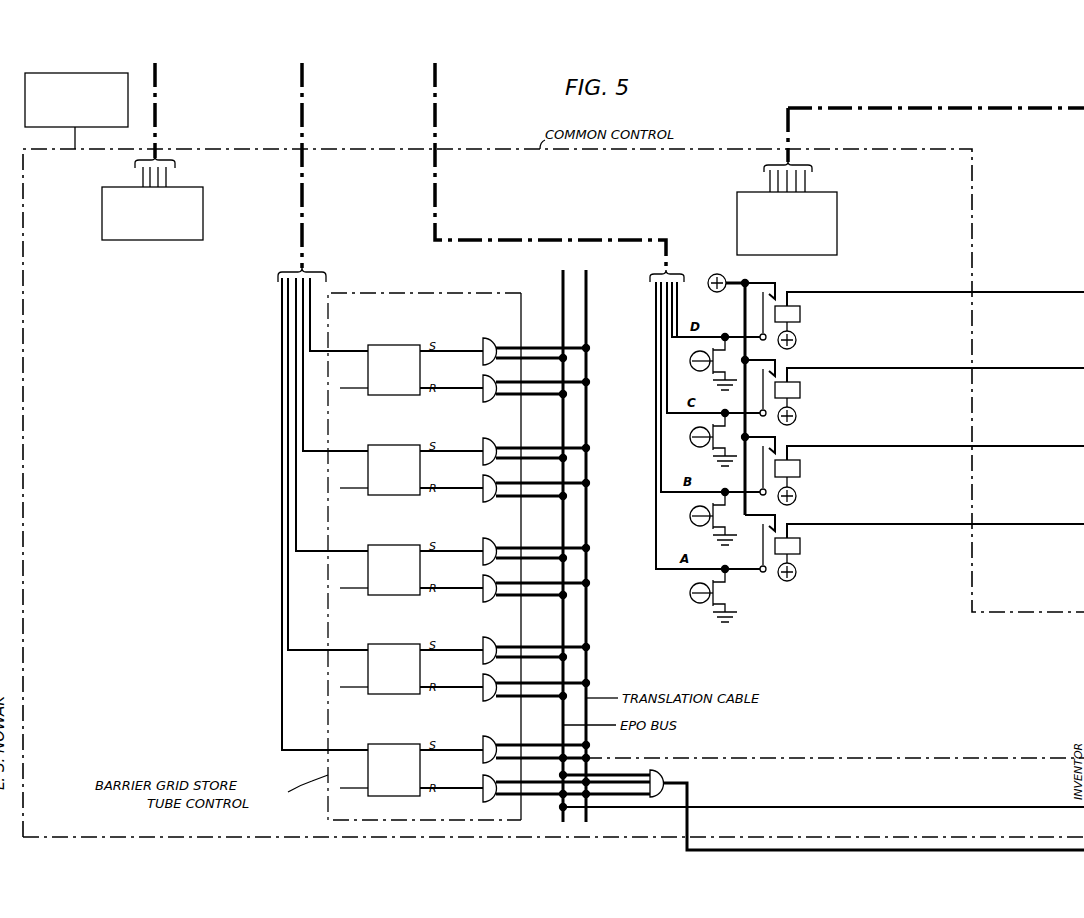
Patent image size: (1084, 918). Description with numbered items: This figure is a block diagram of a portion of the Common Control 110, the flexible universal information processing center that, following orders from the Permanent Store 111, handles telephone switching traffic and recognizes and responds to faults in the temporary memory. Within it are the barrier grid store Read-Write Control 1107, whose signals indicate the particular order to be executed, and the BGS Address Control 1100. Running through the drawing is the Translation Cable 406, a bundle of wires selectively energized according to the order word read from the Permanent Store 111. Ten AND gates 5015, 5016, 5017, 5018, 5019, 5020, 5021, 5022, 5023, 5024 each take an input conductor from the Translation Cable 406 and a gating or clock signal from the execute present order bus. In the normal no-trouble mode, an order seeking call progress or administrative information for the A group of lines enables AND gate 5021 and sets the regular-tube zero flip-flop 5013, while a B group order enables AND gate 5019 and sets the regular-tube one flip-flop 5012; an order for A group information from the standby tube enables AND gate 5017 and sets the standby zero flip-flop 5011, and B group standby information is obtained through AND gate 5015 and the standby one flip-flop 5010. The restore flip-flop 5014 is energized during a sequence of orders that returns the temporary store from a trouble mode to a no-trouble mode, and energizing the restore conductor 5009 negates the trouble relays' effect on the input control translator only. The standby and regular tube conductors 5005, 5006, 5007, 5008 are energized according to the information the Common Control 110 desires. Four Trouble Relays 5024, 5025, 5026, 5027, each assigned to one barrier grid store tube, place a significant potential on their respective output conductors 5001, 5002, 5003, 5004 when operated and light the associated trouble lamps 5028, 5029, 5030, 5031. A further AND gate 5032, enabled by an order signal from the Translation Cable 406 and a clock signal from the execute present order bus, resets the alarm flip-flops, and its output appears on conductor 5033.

The Permanent Store 111 is at (96, 128).
The Common Control 110 is at (346, 149).
The barrier grid store Read-Write Control 1107 is at (140, 240).
The BGS Address Control 1100 is at (837, 225).
The Translation Cable 406 is at (586, 664).
The A conductor 5001 is at (656, 370).
The output conductor 5002 is at (661, 352).
The output conductor 5003 is at (667, 333).
The output conductor 5004 is at (672, 314).
The SB1 conductor 5005 is at (310, 317).
The SB0 conductor 5006 is at (303, 399).
The TB1 conductor 5007 is at (296, 517).
The TB0 conductor 5008 is at (288, 603).
The restore conductor 5009 is at (282, 697).
The SB1 flip-flop 5010 is at (380, 395).
The SB0 flip-flop 5011 is at (380, 495).
The TB1 flip-flop 5012 is at (380, 595).
The TB0 flip-flop 5013 is at (380, 694).
The restore flip-flop 5014 is at (380, 796).
The AND gate 5015 is at (490, 338).
The AND gate 5016 is at (490, 402).
The AND gate 5017 is at (490, 438).
The AND gate 5018 is at (490, 502).
The AND gate 5019 is at (490, 538).
The AND gate 5020 is at (490, 602).
The AND gate 5021 is at (490, 637).
The AND gate 5022 is at (490, 701).
The AND gate 5023 is at (490, 736).
The Trouble Relay 5024 is at (490, 802).
The Trouble Relay 5025 is at (800, 468).
The Trouble Relay 5026 is at (800, 390).
The Trouble Relay 5027 is at (800, 314).
The trouble lamp 5028 is at (692, 600).
The trouble lamp 5029 is at (692, 523).
The trouble lamp 5030 is at (692, 444).
The trouble lamp 5031 is at (692, 368).
The AND gate 5032 is at (662, 772).
The output lead 5033 is at (687, 796).